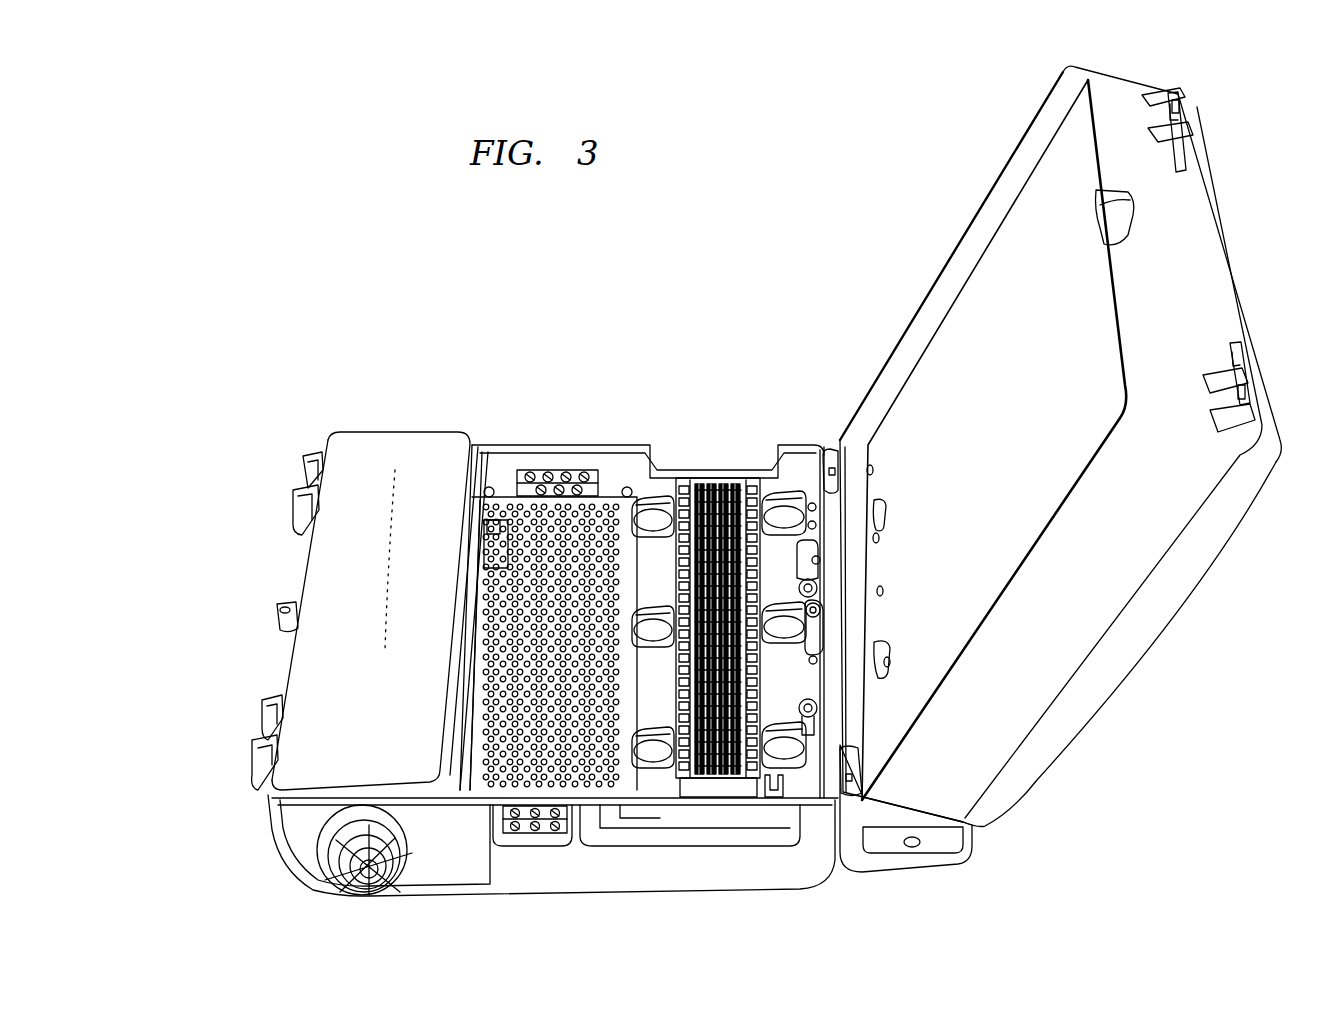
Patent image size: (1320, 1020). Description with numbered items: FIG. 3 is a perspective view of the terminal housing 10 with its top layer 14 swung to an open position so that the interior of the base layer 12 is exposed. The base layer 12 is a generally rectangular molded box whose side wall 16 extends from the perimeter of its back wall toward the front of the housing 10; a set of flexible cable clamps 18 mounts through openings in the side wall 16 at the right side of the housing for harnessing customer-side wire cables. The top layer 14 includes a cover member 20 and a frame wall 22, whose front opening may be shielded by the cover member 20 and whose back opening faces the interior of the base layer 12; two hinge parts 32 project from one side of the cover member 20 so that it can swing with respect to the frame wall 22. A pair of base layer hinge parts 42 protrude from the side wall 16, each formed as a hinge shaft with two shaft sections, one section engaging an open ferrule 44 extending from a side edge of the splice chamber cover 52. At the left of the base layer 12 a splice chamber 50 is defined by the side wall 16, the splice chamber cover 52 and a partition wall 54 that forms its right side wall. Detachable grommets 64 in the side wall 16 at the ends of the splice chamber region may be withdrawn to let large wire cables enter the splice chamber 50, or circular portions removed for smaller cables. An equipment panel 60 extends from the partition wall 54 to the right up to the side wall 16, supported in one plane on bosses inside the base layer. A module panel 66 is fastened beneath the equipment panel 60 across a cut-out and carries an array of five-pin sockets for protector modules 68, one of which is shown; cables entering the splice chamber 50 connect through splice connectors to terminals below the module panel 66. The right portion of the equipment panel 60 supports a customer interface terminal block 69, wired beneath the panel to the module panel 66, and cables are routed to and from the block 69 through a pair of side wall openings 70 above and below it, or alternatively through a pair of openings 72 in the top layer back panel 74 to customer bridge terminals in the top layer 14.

The terminal housing 10 is at (684, 368).
The base layer 12 is at (342, 424).
The top layer 14 is at (972, 203).
The side wall 16 is at (285, 855).
The flexible cable clamps 18 is at (975, 843).
The cover member 20 is at (1157, 630).
The frame wall 22 is at (1027, 158).
The hinge parts 32 is at (1188, 106).
The base layer hinge parts 42 is at (303, 468).
The open ferrule 44 is at (295, 502).
The splice chamber 50 is at (410, 438).
The splice chamber cover 52 is at (373, 467).
The partition wall 54 is at (455, 727).
The equipment panel 60 is at (510, 490).
The detachable grommets 64 is at (310, 820).
The module panel 66 is at (577, 470).
The protector module 68 is at (490, 518).
The customer interface terminal block 69 is at (684, 473).
The side wall openings 70 is at (772, 488).
The openings 72 is at (880, 522).
The top layer back panel 74 is at (982, 298).